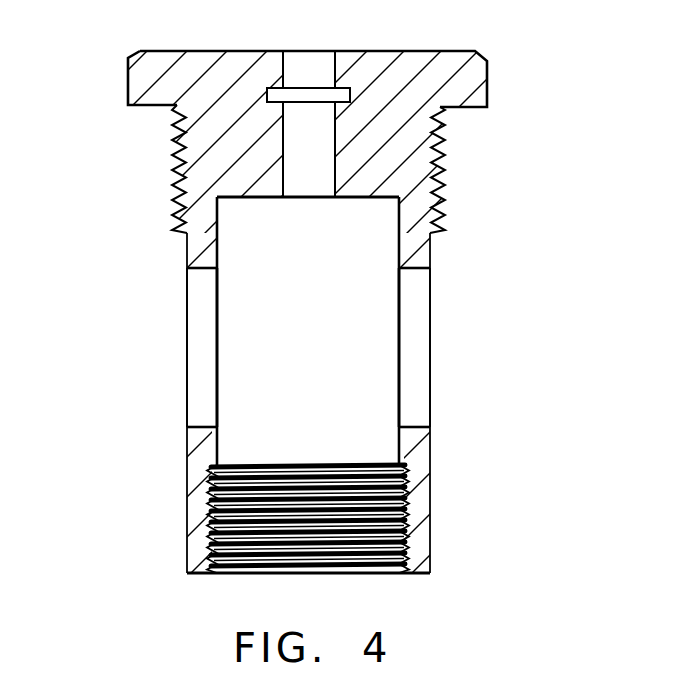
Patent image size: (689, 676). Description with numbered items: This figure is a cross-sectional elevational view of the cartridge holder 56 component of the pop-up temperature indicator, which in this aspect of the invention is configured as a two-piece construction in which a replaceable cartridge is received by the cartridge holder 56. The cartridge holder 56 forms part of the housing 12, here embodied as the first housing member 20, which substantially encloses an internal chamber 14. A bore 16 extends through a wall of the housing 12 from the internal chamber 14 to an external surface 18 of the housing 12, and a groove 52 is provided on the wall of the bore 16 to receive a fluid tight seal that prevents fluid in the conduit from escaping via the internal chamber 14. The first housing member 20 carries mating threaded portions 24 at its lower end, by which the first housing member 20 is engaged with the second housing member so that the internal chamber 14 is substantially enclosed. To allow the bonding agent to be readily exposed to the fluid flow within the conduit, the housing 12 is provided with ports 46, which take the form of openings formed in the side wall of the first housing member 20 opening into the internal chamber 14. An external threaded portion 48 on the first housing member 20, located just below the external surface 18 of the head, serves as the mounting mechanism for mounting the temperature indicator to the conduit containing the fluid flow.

The housing 12 is at (150, 442).
The internal chamber 14 is at (358, 403).
The bore 16 is at (319, 62).
The external surface 18 is at (445, 50).
The first housing member 20 is at (486, 214).
The threaded portions 24 is at (404, 468).
The ports 46 is at (193, 357).
The external threaded portion 48 is at (174, 143).
The groove 52 is at (283, 92).
The cartridge holder 56 is at (140, 257).